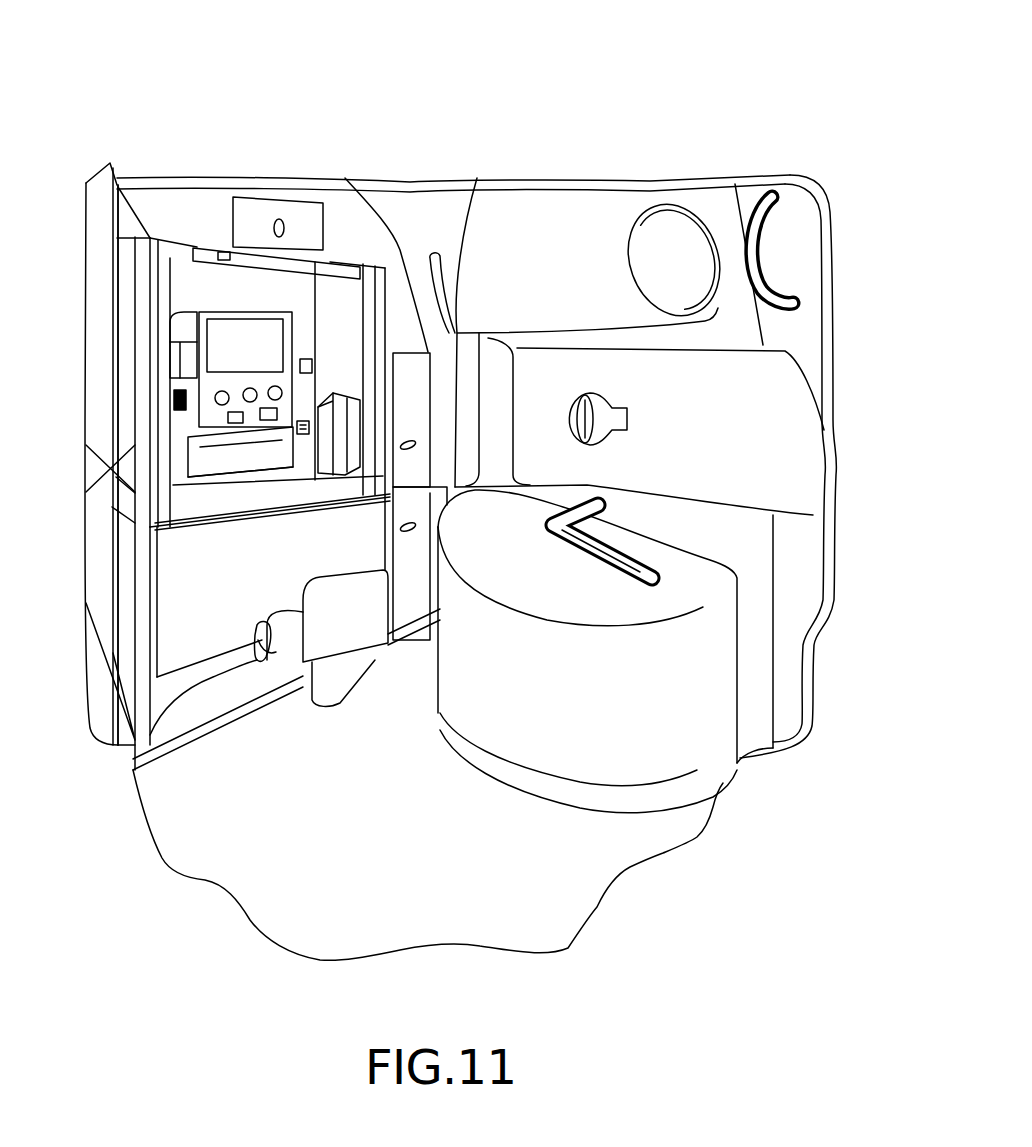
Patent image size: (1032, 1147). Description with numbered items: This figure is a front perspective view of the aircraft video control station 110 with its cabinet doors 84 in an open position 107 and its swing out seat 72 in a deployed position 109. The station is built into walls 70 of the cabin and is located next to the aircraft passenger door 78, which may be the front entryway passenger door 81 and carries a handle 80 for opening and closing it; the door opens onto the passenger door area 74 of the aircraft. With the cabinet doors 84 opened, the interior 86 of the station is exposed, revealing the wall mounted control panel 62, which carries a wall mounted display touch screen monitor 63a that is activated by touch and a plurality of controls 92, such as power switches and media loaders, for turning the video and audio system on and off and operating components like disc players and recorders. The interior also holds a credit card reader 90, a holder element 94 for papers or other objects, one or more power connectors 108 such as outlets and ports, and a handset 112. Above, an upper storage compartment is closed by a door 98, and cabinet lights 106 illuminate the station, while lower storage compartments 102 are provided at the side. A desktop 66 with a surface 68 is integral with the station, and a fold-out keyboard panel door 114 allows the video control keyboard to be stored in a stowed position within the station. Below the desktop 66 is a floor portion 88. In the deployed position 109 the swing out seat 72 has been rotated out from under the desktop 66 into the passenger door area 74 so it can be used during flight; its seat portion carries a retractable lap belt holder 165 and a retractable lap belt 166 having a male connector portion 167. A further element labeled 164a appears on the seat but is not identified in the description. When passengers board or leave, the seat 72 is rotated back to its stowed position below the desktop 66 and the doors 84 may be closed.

The aircraft video control station 110 is at (663, 95).
The walls 70 is at (317, 258).
The cabinet lights 106 is at (252, 262).
The door 98 is at (301, 223).
The interior 86 is at (349, 288).
The lower storage compartments 102 is at (417, 365).
The wall mounted control panel 62 is at (307, 318).
The wall mounted display touch screen monitor 63a is at (247, 333).
The credit card reader 90 is at (309, 359).
The holder element 94 is at (337, 394).
The handset 112 is at (177, 330).
The cabinet doors 84 is at (176, 370).
The controls 92 is at (240, 418).
The open position 107 is at (152, 533).
The deployed position 109 is at (262, 640).
The floor portion 88 is at (192, 723).
The lower rail 164a is at (285, 771).
The swing out seat 72 is at (320, 660).
The retractable lap belt holder 165 is at (259, 670).
The retractable lap belt 166 is at (277, 653).
The male connector portion 167 is at (258, 627).
The fold-out keyboard panel door 114 is at (243, 455).
The desktop 66 is at (214, 520).
The surface 68 is at (188, 513).
The power connectors 108 is at (303, 436).
The front entryway passenger door 81 is at (800, 441).
The handle 80 is at (667, 580).
The aircraft passenger door 78 is at (540, 757).
The passenger door area 74 is at (240, 877).